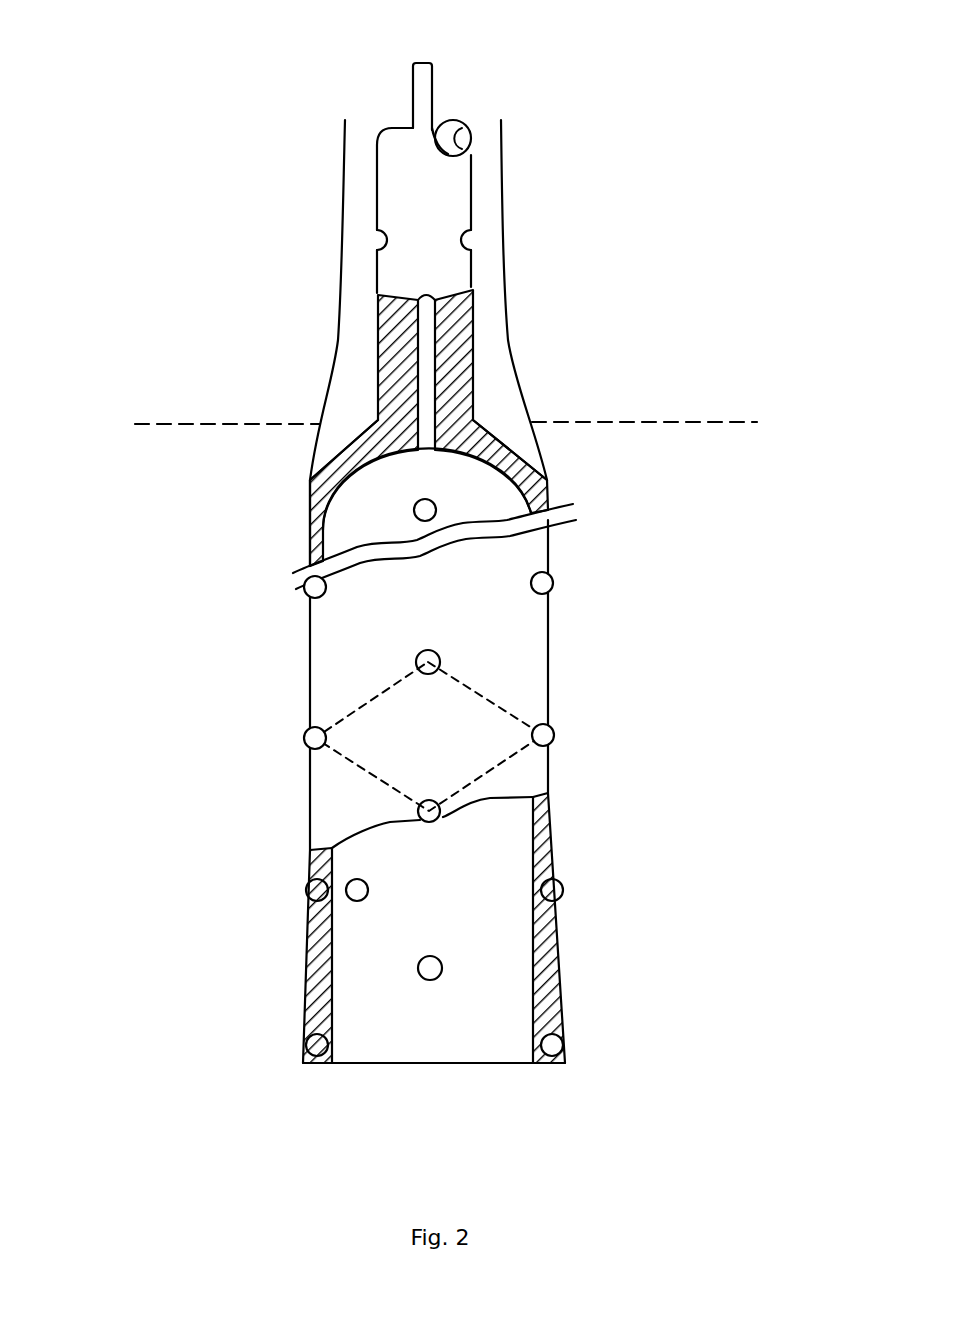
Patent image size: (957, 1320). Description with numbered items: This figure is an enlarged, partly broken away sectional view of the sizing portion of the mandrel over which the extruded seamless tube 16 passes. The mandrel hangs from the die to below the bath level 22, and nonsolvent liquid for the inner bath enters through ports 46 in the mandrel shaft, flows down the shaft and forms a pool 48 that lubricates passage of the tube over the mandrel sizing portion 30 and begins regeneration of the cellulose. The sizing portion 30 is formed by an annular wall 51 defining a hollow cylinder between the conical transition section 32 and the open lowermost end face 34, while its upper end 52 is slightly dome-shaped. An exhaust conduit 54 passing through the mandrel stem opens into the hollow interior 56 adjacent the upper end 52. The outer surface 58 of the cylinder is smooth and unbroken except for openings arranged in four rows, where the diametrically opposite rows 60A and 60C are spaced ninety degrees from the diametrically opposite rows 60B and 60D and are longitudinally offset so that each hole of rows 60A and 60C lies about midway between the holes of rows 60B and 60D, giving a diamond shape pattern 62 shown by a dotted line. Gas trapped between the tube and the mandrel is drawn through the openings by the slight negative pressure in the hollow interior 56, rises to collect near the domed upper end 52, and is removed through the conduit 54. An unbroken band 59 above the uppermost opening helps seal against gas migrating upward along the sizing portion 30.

The seamless tube 16 is at (344, 220).
The bath level 22 is at (119, 389).
The mandrel sizing portion 30 is at (307, 645).
The conical transition section 32 is at (537, 453).
The lowermost end face 34 is at (420, 1065).
The ports 46 is at (463, 240).
The pool 48 is at (346, 368).
The annular wall 51 is at (545, 1043).
The upper end 52 is at (495, 460).
The exhaust conduit 54 is at (435, 85).
The hollow interior 56 is at (375, 1038).
The outer surface 58 is at (510, 630).
The unbroken band 59 is at (303, 483).
The row of openings A 60A is at (421, 724).
The row of openings B 60B is at (552, 582).
The row of openings C 60C is at (443, 963).
The row of openings D 60D is at (308, 737).
The diamond shape pattern 62 is at (487, 697).